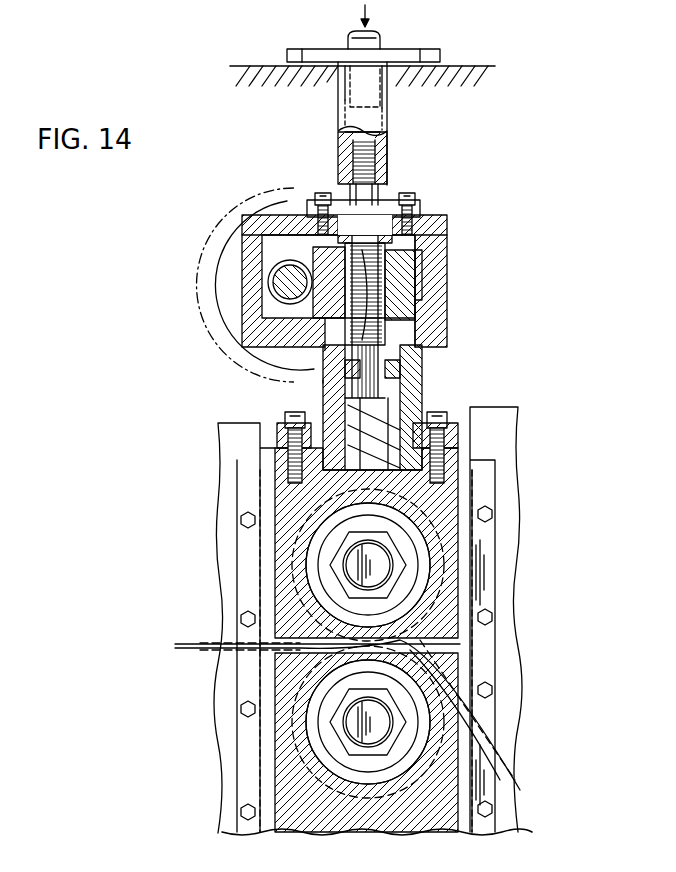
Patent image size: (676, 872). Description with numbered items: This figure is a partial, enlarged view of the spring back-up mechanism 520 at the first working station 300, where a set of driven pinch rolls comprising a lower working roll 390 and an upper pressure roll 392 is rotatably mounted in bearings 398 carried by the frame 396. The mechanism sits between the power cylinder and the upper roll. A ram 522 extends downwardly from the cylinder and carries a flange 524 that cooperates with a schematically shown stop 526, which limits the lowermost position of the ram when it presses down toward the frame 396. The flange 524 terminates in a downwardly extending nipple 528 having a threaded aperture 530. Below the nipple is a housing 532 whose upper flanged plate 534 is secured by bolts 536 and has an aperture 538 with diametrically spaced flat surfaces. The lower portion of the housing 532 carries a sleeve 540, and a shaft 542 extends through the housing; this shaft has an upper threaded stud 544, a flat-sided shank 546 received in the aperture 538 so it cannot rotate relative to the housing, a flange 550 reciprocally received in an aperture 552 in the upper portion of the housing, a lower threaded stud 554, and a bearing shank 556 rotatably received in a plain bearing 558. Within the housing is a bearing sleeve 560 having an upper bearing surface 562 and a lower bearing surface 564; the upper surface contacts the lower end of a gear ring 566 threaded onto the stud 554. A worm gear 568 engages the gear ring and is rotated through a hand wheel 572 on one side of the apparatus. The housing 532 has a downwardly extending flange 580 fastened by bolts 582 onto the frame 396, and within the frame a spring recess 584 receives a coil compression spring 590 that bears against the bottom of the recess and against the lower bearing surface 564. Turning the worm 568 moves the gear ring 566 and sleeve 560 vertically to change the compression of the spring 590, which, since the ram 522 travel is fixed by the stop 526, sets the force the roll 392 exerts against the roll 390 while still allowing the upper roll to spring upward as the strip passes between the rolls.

The first working station 300 is at (218, 98).
The ram 522 is at (348, 43).
The flange 524 is at (432, 49).
The stop 526 is at (492, 68).
The nipple 528 is at (390, 122).
The threaded aperture 530 is at (380, 150).
The upper threaded stud 544 is at (345, 140).
The shank 546 is at (340, 160).
The shaft 542 is at (336, 186).
The aperture 538 is at (386, 198).
The upper flanged plate 534 is at (402, 192).
The bolts 536 is at (412, 196).
The housing 532 is at (460, 255).
The gear ring 566 is at (447, 268).
The worm gear 568 is at (270, 283).
The flange 550 is at (243, 240).
The aperture 552 is at (340, 245).
The lower threaded stud 554 is at (447, 288).
The bearing shank 556 is at (447, 332).
The plain bearing 558 is at (440, 357).
The sleeve 540 is at (430, 383).
The bearing sleeve 560 is at (304, 352).
The upper bearing surface 562 is at (243, 331).
The lower bearing surface 564 is at (312, 378).
The hand wheel 572 is at (208, 352).
The spring back-up mechanism 520 is at (508, 318).
The downwardly extending flange 580 is at (422, 420).
The bolts 582 is at (470, 436).
The spring recess 584 is at (432, 462).
The coil compression spring 590 is at (336, 468).
The frame 396 is at (280, 550).
The bearings 398 is at (427, 573).
The upper pressure roll 392 is at (462, 634).
The lower working roll 390 is at (440, 671).